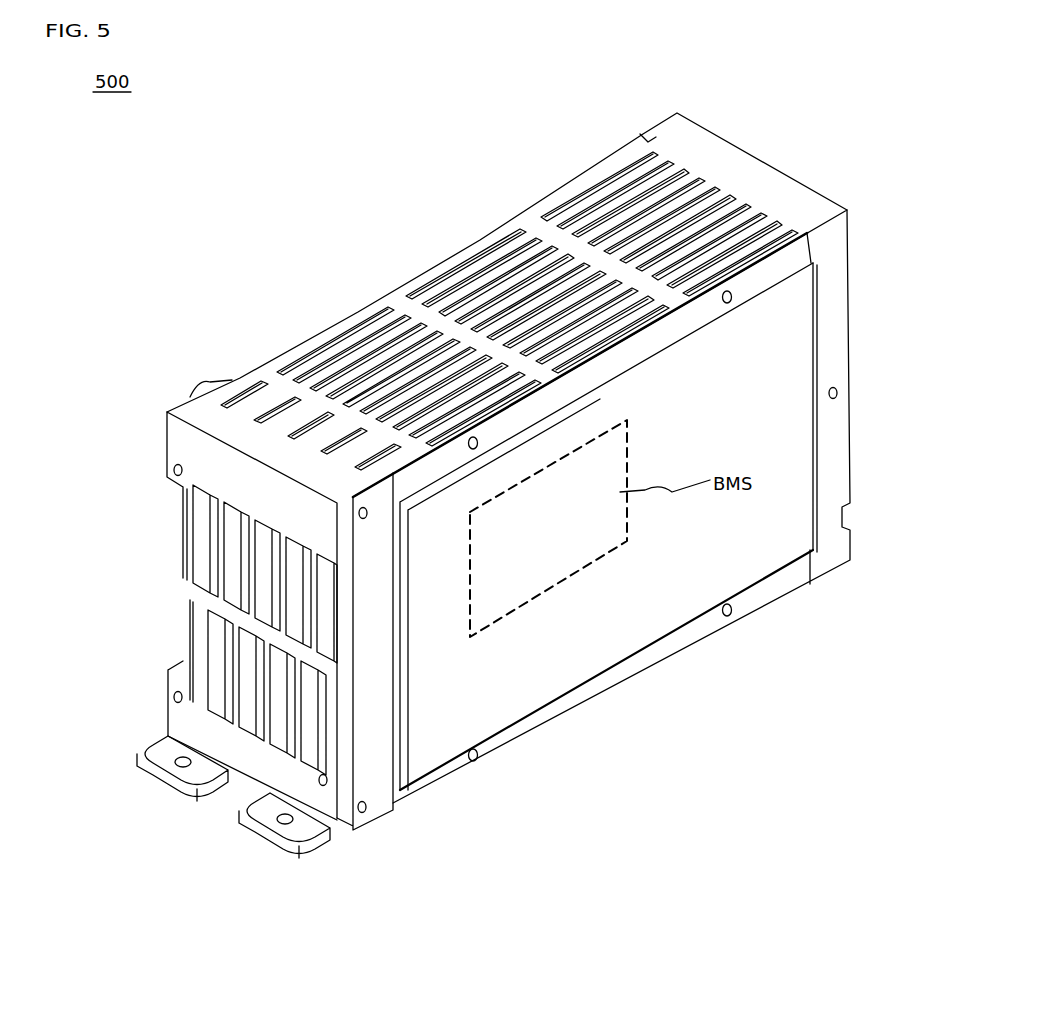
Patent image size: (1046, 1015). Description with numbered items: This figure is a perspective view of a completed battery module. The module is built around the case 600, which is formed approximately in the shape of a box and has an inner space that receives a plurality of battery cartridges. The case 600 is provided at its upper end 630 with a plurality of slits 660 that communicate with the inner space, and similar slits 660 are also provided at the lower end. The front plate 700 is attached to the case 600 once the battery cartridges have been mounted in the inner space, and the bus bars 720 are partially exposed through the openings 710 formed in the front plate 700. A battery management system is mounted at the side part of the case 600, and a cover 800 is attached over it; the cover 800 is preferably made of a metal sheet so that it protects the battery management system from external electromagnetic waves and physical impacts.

The case 600 is at (759, 154).
The upper end 630 is at (533, 227).
The slits 660 is at (475, 272).
The front plate 700 is at (166, 427).
The openings 710 is at (202, 532).
The bus bars 720 is at (185, 592).
The BMS cover 800 is at (690, 592).